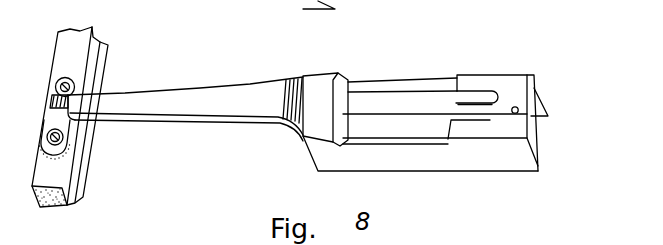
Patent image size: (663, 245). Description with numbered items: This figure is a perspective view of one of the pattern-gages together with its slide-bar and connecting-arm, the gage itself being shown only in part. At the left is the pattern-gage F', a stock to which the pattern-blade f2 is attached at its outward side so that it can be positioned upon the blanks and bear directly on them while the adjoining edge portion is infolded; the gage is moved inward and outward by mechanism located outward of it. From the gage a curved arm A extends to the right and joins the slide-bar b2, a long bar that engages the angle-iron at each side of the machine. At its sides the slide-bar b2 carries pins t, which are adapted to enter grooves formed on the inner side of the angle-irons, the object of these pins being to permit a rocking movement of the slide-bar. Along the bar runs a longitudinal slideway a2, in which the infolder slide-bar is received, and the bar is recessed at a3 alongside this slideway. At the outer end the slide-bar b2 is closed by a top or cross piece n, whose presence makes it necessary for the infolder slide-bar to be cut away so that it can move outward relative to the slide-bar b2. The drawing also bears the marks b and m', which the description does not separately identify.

The pattern-gage F' is at (82, 117).
The pattern-blade f2 is at (124, 99).
The curved arm A is at (171, 118).
The longitudinal slideway a2 is at (420, 122).
The recess a3 is at (358, 82).
The pins t is at (438, 80).
The hole b is at (419, 132).
The slide-bar b2 is at (399, 74).
The hole in lug m' is at (547, 102).
The top or cross piece n is at (518, 128).